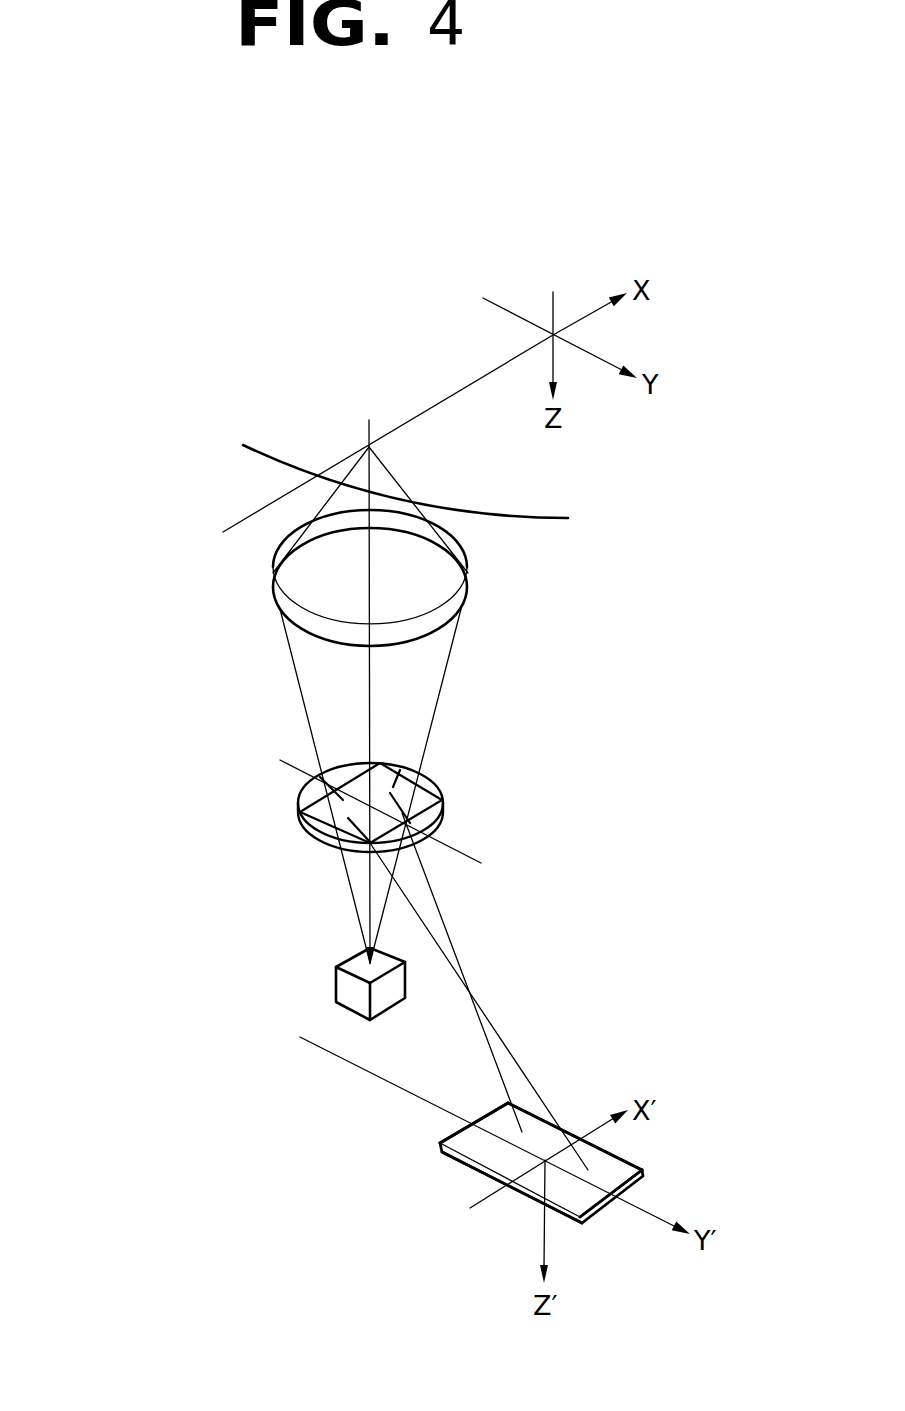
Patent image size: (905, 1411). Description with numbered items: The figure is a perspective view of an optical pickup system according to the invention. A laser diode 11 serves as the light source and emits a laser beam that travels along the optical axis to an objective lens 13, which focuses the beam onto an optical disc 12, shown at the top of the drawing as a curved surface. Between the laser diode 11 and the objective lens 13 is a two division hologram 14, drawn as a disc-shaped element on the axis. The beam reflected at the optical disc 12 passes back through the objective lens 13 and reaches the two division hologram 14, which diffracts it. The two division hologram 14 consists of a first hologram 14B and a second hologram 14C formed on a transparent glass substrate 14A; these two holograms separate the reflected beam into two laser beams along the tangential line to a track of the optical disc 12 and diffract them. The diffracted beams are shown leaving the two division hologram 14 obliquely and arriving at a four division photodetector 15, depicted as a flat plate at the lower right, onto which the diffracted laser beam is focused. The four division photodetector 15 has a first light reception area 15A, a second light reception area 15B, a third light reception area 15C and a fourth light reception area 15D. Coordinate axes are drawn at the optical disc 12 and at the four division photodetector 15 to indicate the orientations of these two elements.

The laser diode 11 is at (348, 992).
The optical disc 12 is at (266, 457).
The objective lens 13 is at (298, 583).
The two division hologram 14 is at (460, 804).
The transparent glass substrate 14A is at (326, 831).
The first hologram 14B is at (322, 772).
The second hologram 14C is at (398, 769).
The four division photodetector 15 is at (632, 1150).
The first light reception area 15A is at (624, 1180).
The second light reception area 15B is at (538, 1130).
The third light reception area 15C is at (535, 1185).
The fourth light reception area 15D is at (472, 1147).